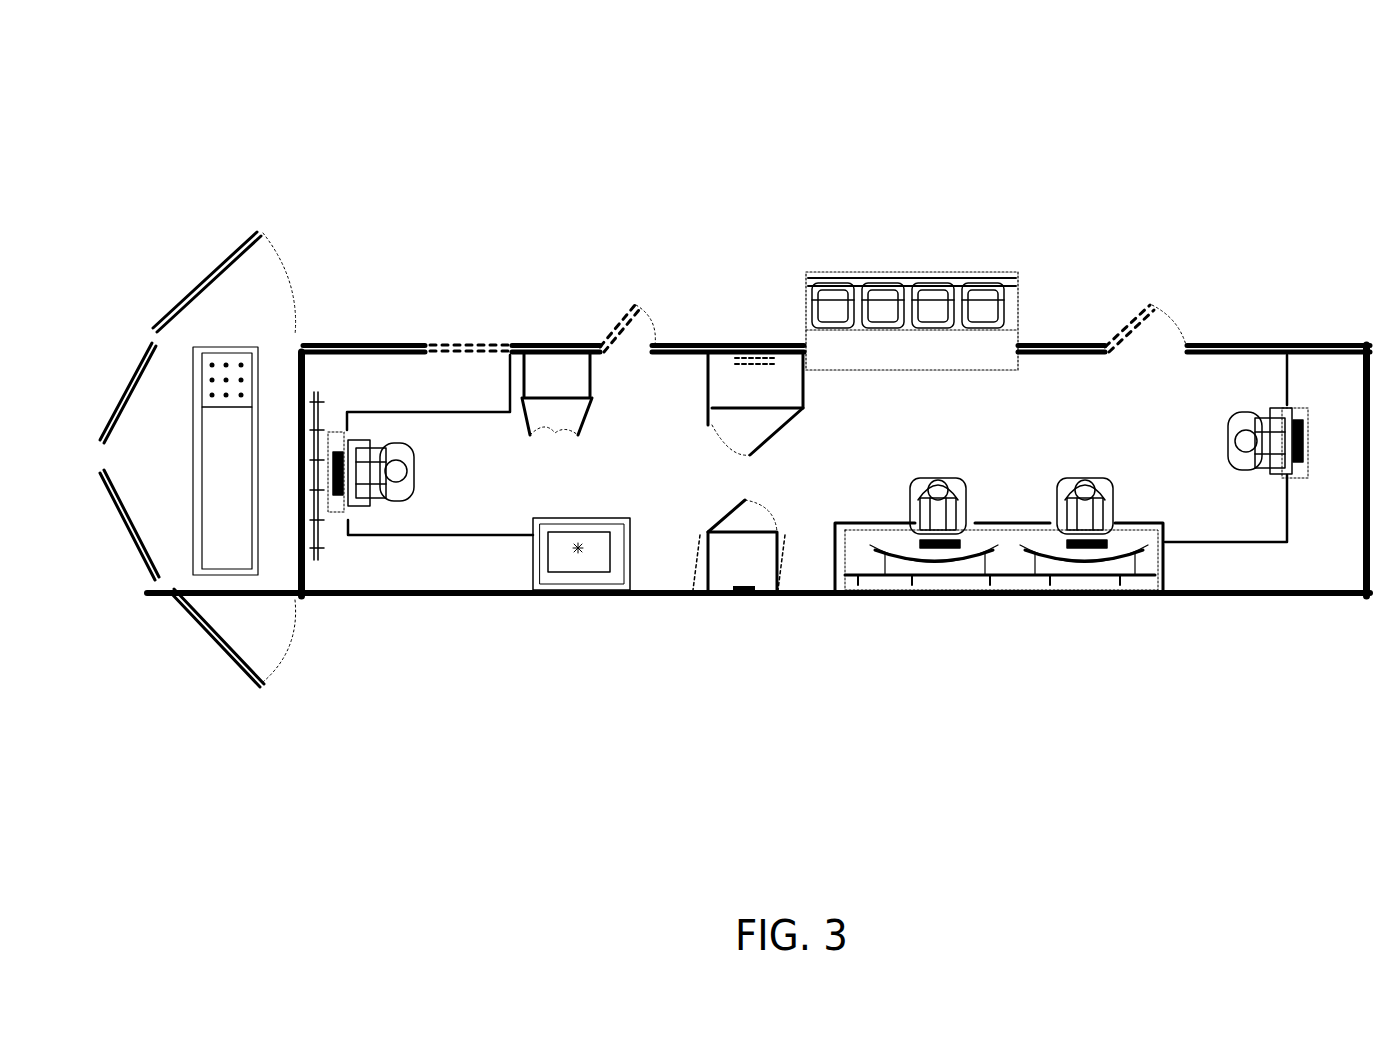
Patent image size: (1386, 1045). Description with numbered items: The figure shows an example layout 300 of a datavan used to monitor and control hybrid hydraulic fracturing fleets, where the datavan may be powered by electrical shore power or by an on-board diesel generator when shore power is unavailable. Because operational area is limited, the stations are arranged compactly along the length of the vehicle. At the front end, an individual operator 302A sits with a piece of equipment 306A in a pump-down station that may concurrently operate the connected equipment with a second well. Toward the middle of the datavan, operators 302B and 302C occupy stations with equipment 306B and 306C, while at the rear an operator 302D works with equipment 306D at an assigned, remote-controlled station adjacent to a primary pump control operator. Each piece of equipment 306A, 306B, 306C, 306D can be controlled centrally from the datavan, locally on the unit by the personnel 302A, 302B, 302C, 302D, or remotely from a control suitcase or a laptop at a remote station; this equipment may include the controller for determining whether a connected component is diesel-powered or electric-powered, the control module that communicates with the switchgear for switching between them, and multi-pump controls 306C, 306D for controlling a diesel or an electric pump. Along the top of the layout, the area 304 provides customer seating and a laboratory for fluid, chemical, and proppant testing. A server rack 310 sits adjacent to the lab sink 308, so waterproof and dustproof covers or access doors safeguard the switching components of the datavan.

The layout 300 is at (1213, 97).
The operator 302A is at (373, 513).
The operator 302B is at (943, 583).
The operator 302C is at (1090, 583).
The operator 302D is at (1243, 480).
The customer seating and laboratory area 304 is at (817, 287).
The equipment 306A is at (323, 387).
The equipment 306B is at (887, 583).
The multi-pump controls 306C is at (1052, 583).
The multi-pump controls 306D is at (1297, 407).
The lab sink 308 is at (577, 567).
The server rack 310 is at (710, 588).